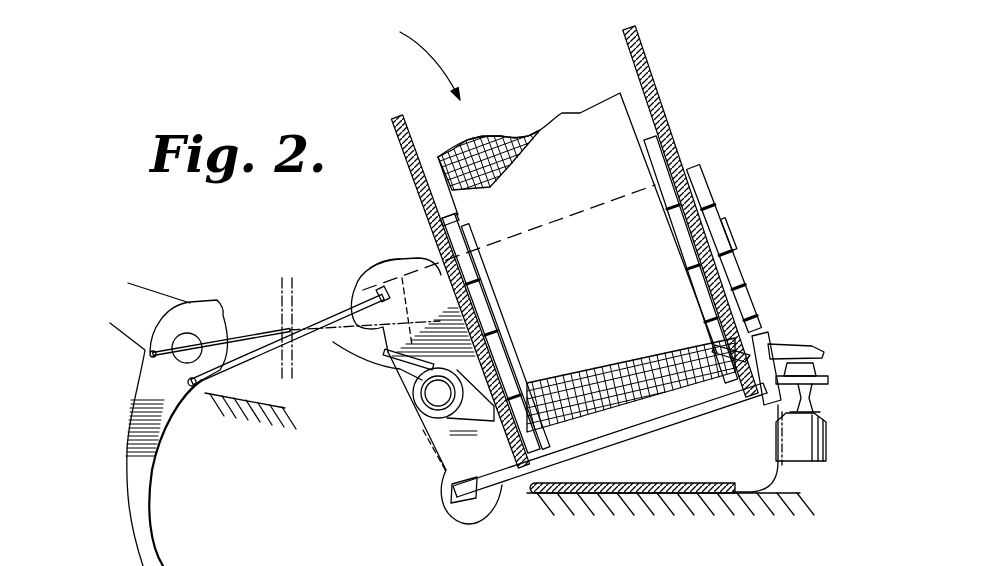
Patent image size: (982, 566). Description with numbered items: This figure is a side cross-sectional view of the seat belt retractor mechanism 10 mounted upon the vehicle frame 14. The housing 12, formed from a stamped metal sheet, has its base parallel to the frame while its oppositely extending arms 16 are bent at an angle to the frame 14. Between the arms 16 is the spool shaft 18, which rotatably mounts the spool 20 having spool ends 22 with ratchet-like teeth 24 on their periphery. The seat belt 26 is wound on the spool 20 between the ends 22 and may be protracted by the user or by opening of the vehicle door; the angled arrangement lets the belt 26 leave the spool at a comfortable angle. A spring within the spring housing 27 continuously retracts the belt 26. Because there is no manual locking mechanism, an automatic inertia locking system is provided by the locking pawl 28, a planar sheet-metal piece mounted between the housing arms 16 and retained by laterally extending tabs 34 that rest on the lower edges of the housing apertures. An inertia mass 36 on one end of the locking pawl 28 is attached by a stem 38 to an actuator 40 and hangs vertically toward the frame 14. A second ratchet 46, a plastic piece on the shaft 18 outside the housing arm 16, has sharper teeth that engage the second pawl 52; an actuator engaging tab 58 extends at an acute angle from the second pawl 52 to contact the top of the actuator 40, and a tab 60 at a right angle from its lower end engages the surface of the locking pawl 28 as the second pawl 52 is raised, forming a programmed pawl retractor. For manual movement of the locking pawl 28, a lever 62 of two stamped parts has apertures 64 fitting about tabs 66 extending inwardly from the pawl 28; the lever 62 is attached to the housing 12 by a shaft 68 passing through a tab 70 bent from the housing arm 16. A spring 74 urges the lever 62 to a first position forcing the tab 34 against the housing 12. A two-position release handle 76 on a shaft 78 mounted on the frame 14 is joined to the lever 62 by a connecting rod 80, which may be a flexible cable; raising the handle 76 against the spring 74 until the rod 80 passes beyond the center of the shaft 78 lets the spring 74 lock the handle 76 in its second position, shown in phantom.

The seat belt retractor mechanism 10 is at (413, 53).
The housing 12 is at (668, 495).
The vehicle frame 14 is at (740, 507).
The arms 16 is at (396, 140).
The spool shaft 18 is at (733, 232).
The spool 20 is at (587, 208).
The spool ends 22 is at (465, 250).
The ratchet-like teeth 24 is at (440, 230).
The seat belt 26 is at (552, 133).
The spring housing 27 is at (400, 266).
The locking pawl 28 is at (647, 427).
The tabs 34 is at (670, 366).
The inertia mass 36 is at (813, 467).
The stem 38 is at (772, 405).
The actuator 40 is at (815, 360).
The second ratchet 46 is at (707, 173).
The second pawl 52 is at (740, 353).
The actuator engaging tab 58 is at (777, 340).
The tab 60 is at (760, 402).
The lever 62 is at (430, 455).
The apertures 64 is at (450, 502).
The tabs 66 is at (483, 500).
The shaft 68 is at (433, 394).
The tab 70 is at (462, 350).
The spring 74 is at (382, 353).
The two-position release handle 76 is at (143, 517).
The shaft 78 is at (187, 336).
The connecting rod 80 is at (255, 332).